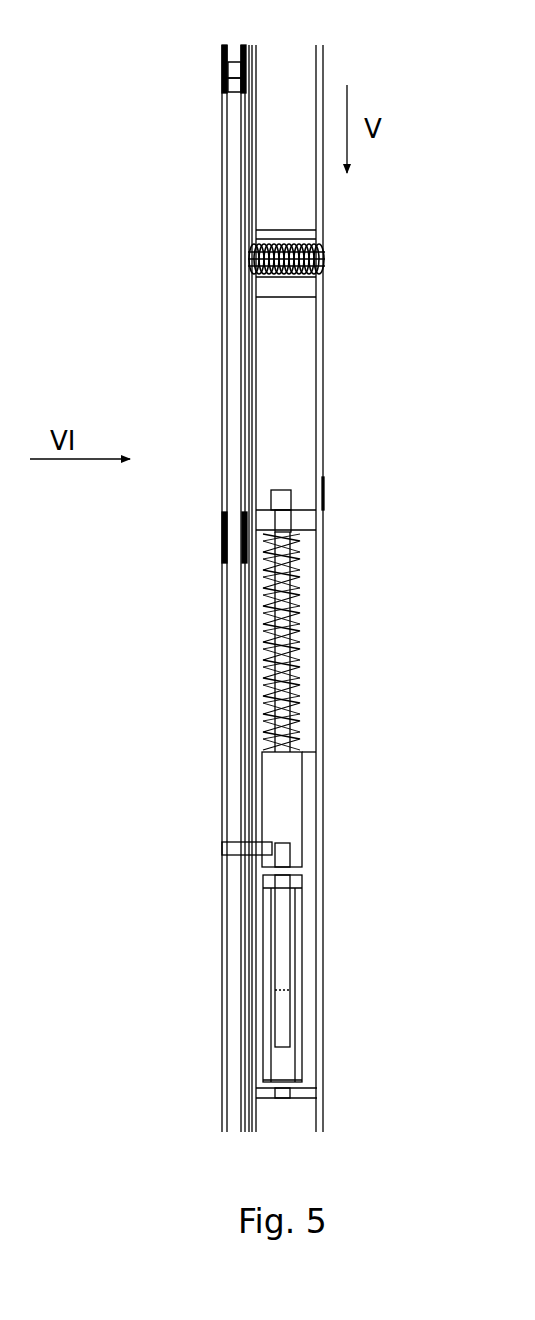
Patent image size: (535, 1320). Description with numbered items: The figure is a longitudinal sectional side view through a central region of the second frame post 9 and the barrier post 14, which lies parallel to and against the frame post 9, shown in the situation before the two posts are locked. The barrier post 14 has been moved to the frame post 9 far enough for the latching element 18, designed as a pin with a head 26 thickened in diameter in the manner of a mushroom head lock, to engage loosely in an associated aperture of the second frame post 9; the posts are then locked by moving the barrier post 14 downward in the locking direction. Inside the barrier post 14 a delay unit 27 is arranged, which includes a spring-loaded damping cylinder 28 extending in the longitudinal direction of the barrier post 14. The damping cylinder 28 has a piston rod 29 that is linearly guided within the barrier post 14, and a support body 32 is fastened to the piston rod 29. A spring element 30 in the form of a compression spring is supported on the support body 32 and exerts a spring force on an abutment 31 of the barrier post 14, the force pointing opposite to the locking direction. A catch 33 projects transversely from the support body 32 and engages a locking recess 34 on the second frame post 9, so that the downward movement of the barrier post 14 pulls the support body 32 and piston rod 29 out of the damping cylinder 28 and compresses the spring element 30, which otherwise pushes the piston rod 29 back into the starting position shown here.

The second frame post 9 is at (232, 162).
The barrier post 14 is at (318, 340).
The latching element 18 is at (233, 72).
The head 26 is at (233, 80).
The delay unit 27 is at (308, 758).
The damping cylinder 28 is at (292, 1033).
The piston rod 29 is at (290, 498).
The spring element 30 is at (265, 565).
The abutment 31 is at (293, 520).
The support body 32 is at (290, 788).
The catch 33 is at (230, 853).
The locking recess 34 is at (223, 842).